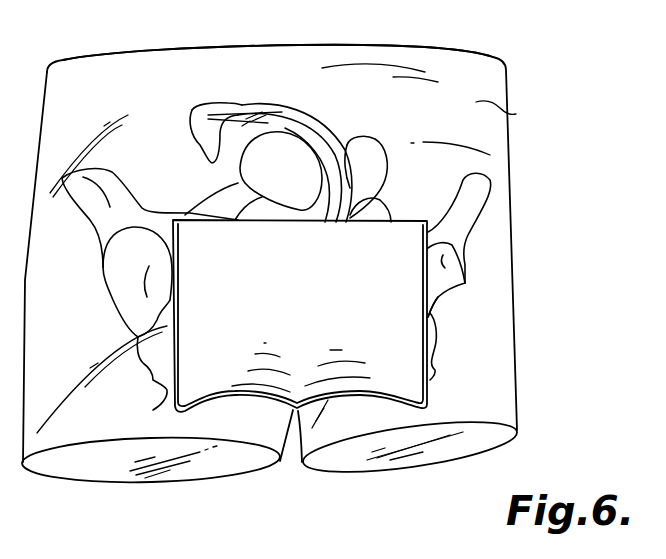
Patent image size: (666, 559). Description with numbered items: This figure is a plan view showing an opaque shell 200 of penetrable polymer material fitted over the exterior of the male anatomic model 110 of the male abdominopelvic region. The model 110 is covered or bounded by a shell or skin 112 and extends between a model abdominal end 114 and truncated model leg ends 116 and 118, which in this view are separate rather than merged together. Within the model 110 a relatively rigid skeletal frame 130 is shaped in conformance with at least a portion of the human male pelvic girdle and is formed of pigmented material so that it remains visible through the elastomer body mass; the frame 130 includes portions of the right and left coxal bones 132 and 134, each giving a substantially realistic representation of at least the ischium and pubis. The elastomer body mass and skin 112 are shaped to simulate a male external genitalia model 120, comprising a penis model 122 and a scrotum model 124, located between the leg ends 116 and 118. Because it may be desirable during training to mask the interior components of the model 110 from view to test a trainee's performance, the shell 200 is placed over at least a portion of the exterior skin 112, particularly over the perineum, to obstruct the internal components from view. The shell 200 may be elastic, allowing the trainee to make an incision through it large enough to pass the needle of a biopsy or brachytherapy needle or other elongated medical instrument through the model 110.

The male anatomic model 110 is at (225, 498).
The shell or skin 112 is at (524, 115).
The model abdominal end 114 is at (384, 44).
The truncated model leg end 116 is at (87, 467).
The truncated model leg end 118 is at (450, 450).
The external genitalia model 120 is at (283, 101).
The penis model 122 is at (212, 108).
The scrotum model 124 is at (373, 160).
The skeletal frame 130 is at (535, 173).
The right coxal bone 132 is at (447, 335).
The left coxal bone 134 is at (158, 212).
The shell 200 is at (316, 302).